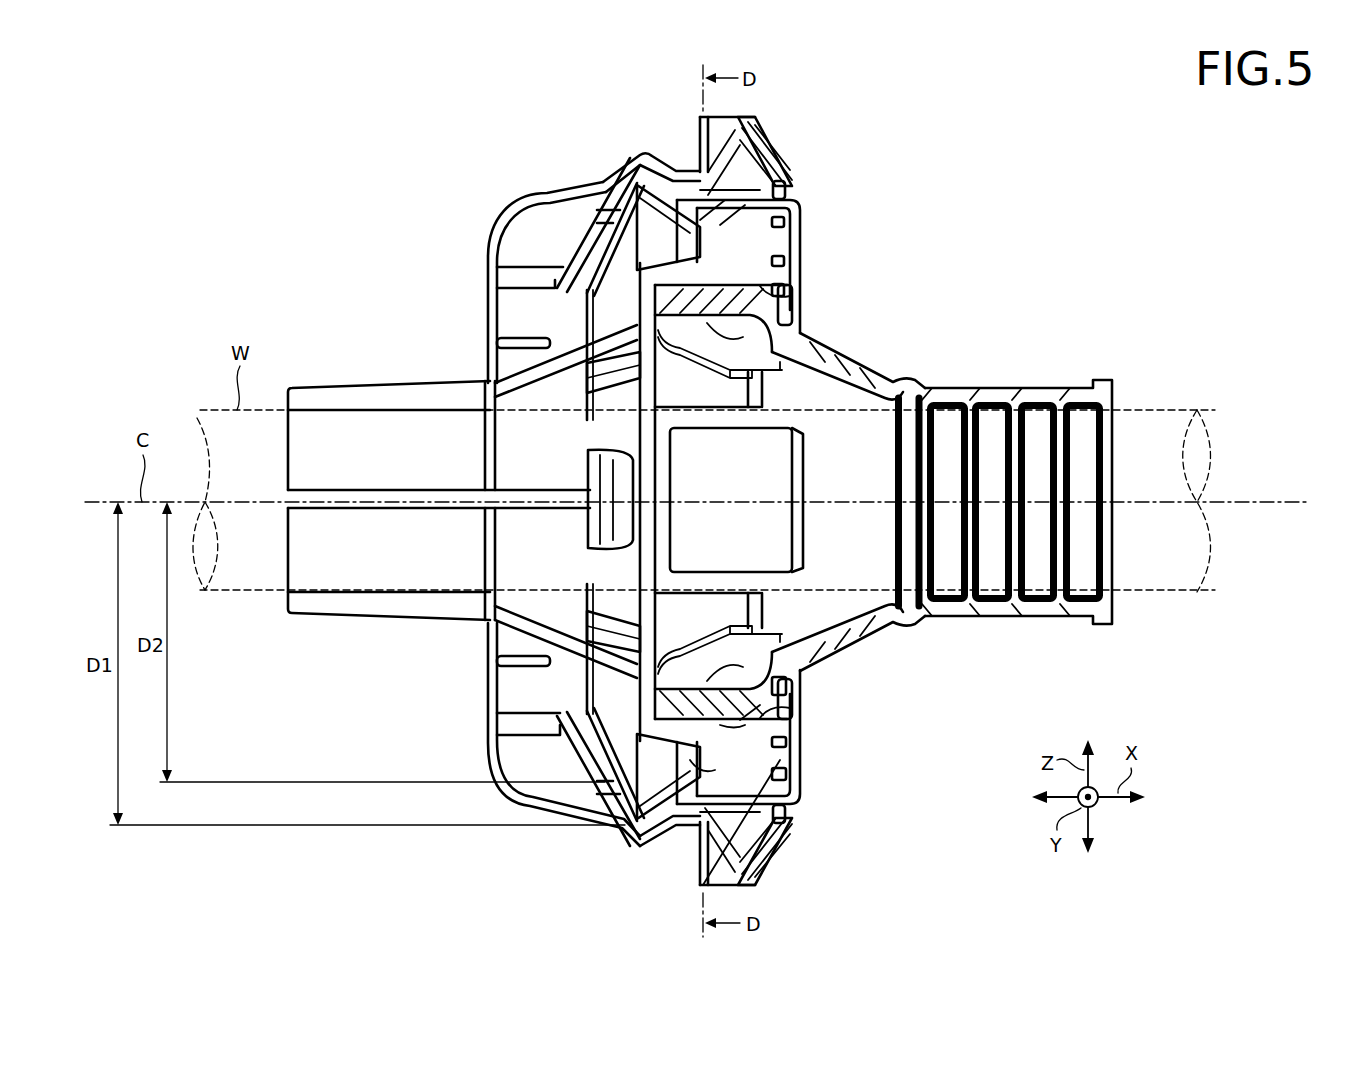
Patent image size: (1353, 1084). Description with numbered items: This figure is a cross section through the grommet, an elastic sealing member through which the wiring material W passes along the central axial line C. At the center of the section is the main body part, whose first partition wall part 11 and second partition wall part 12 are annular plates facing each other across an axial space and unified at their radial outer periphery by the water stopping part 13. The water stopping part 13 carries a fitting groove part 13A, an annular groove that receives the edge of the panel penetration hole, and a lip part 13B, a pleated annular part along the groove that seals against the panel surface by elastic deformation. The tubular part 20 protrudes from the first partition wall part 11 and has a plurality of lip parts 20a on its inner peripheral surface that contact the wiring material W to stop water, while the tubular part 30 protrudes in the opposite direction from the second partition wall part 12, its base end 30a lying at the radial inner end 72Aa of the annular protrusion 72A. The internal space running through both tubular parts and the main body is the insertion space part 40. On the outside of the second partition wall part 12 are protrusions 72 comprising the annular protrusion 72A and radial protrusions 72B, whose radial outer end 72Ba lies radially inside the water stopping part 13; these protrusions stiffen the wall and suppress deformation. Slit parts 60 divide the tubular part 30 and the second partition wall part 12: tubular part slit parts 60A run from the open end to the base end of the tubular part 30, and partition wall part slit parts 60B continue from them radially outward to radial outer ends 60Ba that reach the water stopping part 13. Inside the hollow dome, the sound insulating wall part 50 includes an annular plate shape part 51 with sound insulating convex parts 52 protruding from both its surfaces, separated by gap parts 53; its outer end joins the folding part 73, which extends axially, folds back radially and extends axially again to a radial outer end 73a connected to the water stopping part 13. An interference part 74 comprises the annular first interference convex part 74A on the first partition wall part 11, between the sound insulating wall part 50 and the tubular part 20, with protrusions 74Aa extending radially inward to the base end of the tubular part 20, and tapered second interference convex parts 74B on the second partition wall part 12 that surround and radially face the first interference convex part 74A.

The first partition wall part 11 is at (805, 690).
The second partition wall part 12 is at (503, 210).
The water stopping part 13 is at (748, 112).
The fitting groove part 13A is at (655, 155).
The lip part 13B is at (700, 127).
The tubular part 20 is at (1037, 383).
The lip parts 20a is at (930, 585).
The tubular part 30 is at (360, 383).
The base end 30a is at (560, 330).
The insertion space part 40 is at (740, 795).
The sound insulating wall part 50 is at (829, 528).
The plate shape part 51 is at (806, 245).
The sound insulating convex parts 52 is at (806, 225).
The gap parts 53 is at (806, 215).
The slit parts 60 is at (312, 398).
The tubular part slit parts 60A is at (427, 396).
The partition wall part slit parts 60B is at (575, 273).
The radial outer ends 60Ba is at (602, 200).
The protrusions 72 is at (485, 272).
The annular protrusions 72A is at (520, 306).
The radial inner end 72Aa is at (499, 501).
The radial protrusions 72B is at (545, 198).
The radial outer end 72Ba is at (592, 183).
The folding part 73 is at (806, 198).
The radial outer end 73a is at (805, 195).
The interference part 74 is at (869, 485).
The first interference convex part 74A is at (770, 335).
The protrusions 74Aa is at (840, 352).
The second interference convex parts 74B is at (775, 210).